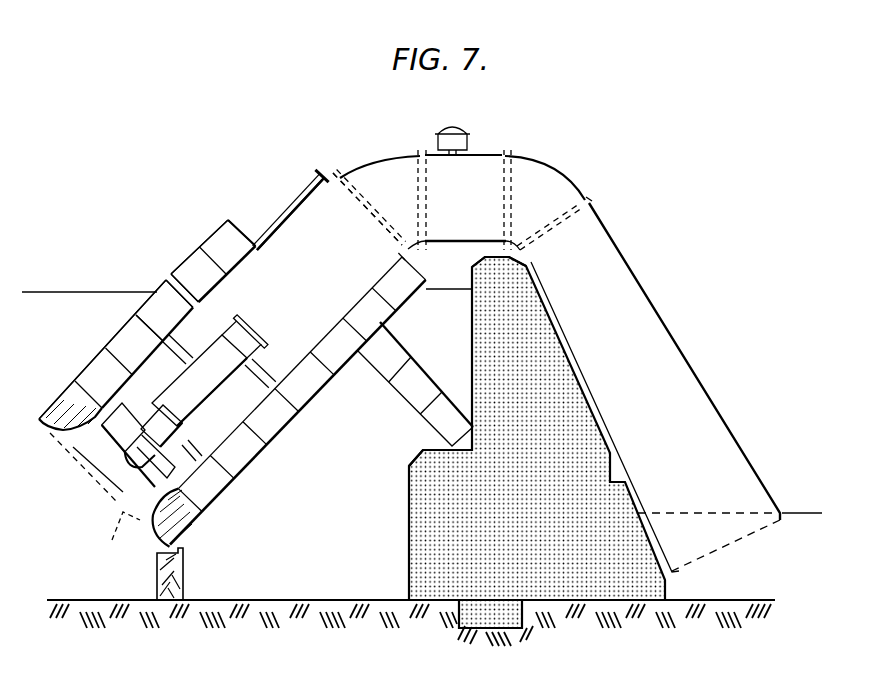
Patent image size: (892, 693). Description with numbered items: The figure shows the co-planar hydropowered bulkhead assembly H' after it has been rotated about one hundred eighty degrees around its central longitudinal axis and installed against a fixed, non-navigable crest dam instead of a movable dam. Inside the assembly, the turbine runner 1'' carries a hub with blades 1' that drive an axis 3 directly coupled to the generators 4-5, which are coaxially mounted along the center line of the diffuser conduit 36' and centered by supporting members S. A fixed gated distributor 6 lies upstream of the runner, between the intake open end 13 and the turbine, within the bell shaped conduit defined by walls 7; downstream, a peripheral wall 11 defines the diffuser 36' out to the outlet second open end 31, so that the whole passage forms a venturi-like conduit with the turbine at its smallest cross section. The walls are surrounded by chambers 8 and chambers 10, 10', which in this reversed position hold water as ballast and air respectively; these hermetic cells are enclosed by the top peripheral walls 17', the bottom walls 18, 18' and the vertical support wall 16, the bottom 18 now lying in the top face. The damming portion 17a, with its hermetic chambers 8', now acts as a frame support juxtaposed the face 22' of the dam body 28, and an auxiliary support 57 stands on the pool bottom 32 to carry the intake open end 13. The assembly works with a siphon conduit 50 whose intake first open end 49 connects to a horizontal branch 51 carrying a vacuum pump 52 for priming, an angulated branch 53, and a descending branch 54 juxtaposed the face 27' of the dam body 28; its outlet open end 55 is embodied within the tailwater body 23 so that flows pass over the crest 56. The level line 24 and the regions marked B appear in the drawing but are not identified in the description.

The blades 1' is at (128, 438).
The turbine runner 1'' is at (96, 485).
The axis 3 is at (164, 436).
The generators 4-5 is at (210, 370).
The fixed gated distributor 6 is at (90, 462).
The walls 7 is at (120, 500).
The chambers 8 is at (286, 400).
The hermetic chambers 8' is at (417, 392).
The chambers 10 is at (116, 349).
The chambers 10' is at (270, 280).
The peripheral wall 11 is at (257, 260).
The intake open end 13 is at (110, 537).
The vertical support wall 16 is at (244, 232).
The top peripheral walls 17' is at (321, 401).
The damming portion 17a is at (390, 384).
The bottom walls 18 is at (133, 316).
The bottom walls 18' is at (291, 210).
The face of dam body 22' is at (419, 448).
The tailwater level 23 is at (806, 510).
The level line 24 is at (87, 281).
The face of dam body 27' is at (605, 417).
The dam body 28 is at (532, 473).
The outlet second open end 31 is at (346, 204).
The pool bottom 32 is at (318, 600).
The diffuser conduit 36' is at (355, 277).
The intake first open end 49 is at (381, 193).
The siphon conduit 50 is at (580, 186).
The horizontal branch 51 is at (473, 193).
The vacuum pump 52 is at (452, 130).
The angulated branch 53 is at (542, 193).
The descending branch 54 is at (655, 401).
The outlet open end 55 is at (713, 551).
The crest 56 is at (492, 254).
The auxiliary support 57 is at (168, 595).
The bumper B is at (63, 392).
The bulkhead assembly H' is at (155, 266).
The supporting members S is at (193, 440).